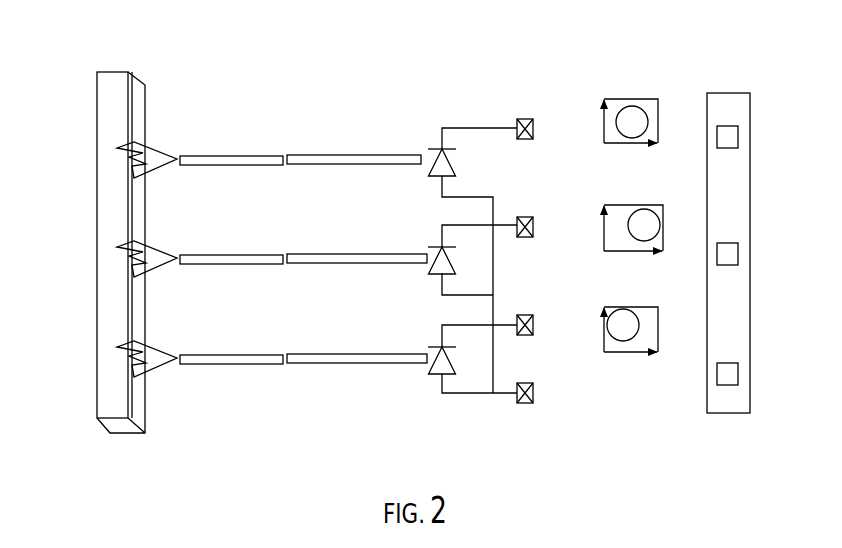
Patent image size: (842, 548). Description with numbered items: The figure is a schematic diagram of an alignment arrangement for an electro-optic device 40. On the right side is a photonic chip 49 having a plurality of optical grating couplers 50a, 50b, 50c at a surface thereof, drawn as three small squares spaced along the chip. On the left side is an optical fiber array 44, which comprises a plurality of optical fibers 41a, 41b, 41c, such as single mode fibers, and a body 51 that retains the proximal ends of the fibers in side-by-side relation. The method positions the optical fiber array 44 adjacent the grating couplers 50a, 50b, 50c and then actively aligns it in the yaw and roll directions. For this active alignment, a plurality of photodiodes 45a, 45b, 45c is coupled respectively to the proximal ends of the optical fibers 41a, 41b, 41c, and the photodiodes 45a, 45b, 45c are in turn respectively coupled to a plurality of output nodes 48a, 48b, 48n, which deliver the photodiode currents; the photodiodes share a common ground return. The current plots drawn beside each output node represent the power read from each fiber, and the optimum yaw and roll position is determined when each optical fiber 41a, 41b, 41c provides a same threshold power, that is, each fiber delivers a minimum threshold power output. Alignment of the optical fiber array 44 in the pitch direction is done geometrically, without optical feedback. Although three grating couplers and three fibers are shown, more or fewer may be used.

The electro-optic device 40 is at (396, 48).
The optical fiber 41a is at (122, 148).
The optical fiber 41b is at (124, 250).
The optical fiber 41c is at (121, 343).
The optical fiber array 44 is at (149, 223).
The photodiode 45a is at (442, 170).
The photodiode 45b is at (432, 262).
The photodiode 45c is at (432, 370).
The output node 48a is at (533, 126).
The output node 48b is at (534, 215).
The output node 48n is at (534, 314).
The photonic chip 49 is at (729, 91).
The optical grating coupler 50a is at (728, 137).
The optical grating coupler 50b is at (728, 255).
The optical grating coupler 50c is at (728, 374).
The body 51 is at (118, 82).